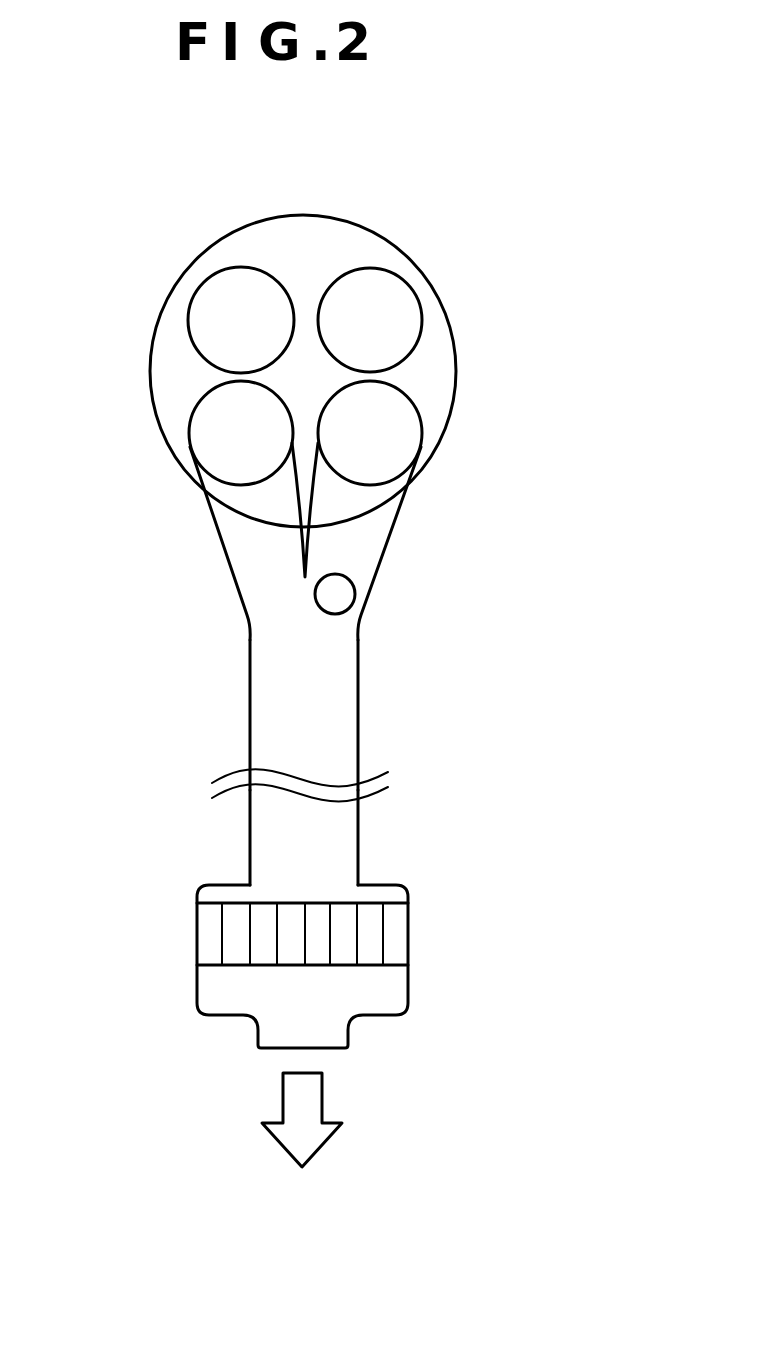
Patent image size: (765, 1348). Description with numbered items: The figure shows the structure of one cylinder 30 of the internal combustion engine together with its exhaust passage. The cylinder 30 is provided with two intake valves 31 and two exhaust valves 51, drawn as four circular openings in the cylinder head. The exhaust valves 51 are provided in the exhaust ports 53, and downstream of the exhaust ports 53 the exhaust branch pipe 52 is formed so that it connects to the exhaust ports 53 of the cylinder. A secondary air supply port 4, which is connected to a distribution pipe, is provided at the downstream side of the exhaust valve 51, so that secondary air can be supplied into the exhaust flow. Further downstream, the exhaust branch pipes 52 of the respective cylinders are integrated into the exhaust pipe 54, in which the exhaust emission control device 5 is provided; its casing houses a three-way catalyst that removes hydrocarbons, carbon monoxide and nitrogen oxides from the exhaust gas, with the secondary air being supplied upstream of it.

The cylinder 30 is at (157, 336).
The intake valve 31 is at (223, 293).
The exhaust valve 51 is at (207, 423).
The exhaust port 53 is at (243, 543).
The secondary air supply port 4 is at (340, 588).
The exhaust branch pipe 52 is at (343, 668).
The exhaust pipe 54 is at (343, 832).
The exhaust emission control device 5 is at (395, 930).